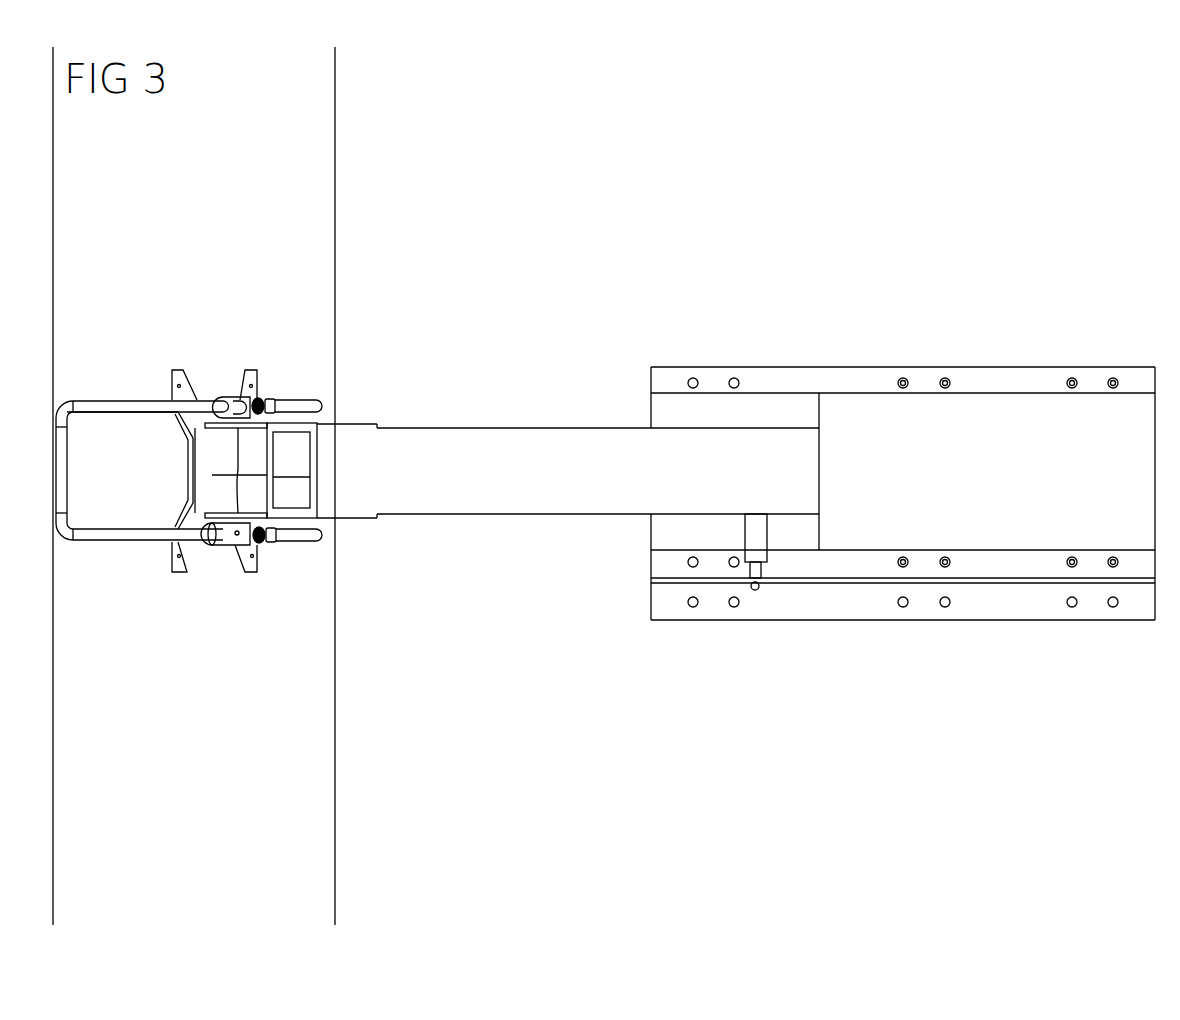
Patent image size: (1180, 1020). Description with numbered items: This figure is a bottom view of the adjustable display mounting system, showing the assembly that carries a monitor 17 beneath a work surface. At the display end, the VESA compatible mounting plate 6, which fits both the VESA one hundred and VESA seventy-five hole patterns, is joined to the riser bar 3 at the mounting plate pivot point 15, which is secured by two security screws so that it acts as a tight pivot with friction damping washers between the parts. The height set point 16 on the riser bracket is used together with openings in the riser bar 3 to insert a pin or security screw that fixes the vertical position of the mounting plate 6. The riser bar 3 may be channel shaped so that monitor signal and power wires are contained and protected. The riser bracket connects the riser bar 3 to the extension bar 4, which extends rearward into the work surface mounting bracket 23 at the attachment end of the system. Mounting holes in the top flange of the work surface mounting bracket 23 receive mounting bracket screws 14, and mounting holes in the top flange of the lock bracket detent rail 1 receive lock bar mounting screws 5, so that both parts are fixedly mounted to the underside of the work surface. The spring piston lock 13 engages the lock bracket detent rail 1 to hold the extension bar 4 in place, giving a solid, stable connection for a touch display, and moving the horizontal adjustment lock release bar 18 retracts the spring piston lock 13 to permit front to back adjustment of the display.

The lock bracket detent rail 1 is at (903, 545).
The riser bar 3 is at (323, 426).
The extension bar 4 is at (568, 471).
The lock bar mounting screws 5 is at (932, 664).
The mounting plate 6 is at (188, 470).
The spring piston lock 13 is at (761, 600).
The mounting bracket screws 14 is at (925, 339).
The mounting plate pivot point 15 is at (294, 421).
The height set point 16 is at (244, 525).
The monitor 17 is at (342, 208).
The horizontal adjustment lock release bar 18 is at (189, 429).
The work surface mounting bracket 23 is at (903, 325).